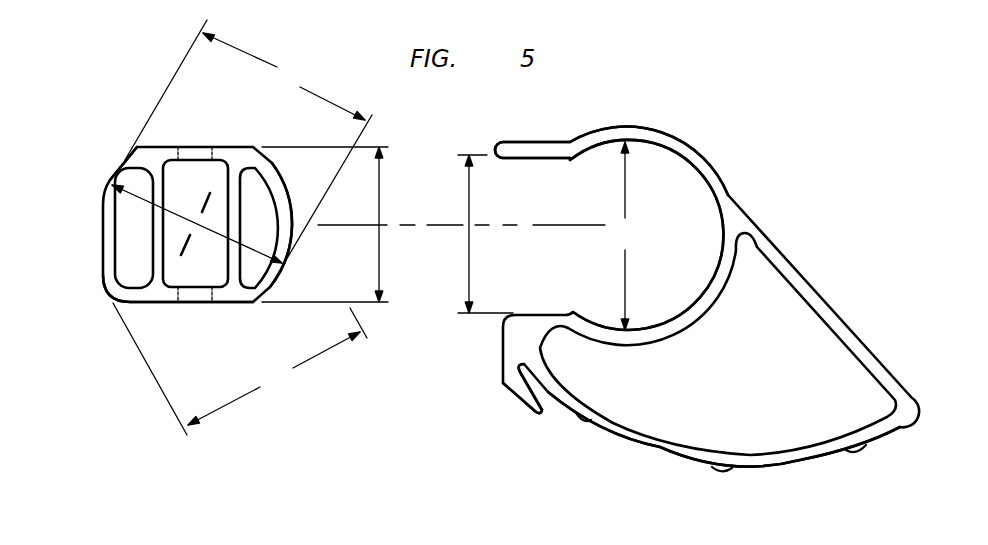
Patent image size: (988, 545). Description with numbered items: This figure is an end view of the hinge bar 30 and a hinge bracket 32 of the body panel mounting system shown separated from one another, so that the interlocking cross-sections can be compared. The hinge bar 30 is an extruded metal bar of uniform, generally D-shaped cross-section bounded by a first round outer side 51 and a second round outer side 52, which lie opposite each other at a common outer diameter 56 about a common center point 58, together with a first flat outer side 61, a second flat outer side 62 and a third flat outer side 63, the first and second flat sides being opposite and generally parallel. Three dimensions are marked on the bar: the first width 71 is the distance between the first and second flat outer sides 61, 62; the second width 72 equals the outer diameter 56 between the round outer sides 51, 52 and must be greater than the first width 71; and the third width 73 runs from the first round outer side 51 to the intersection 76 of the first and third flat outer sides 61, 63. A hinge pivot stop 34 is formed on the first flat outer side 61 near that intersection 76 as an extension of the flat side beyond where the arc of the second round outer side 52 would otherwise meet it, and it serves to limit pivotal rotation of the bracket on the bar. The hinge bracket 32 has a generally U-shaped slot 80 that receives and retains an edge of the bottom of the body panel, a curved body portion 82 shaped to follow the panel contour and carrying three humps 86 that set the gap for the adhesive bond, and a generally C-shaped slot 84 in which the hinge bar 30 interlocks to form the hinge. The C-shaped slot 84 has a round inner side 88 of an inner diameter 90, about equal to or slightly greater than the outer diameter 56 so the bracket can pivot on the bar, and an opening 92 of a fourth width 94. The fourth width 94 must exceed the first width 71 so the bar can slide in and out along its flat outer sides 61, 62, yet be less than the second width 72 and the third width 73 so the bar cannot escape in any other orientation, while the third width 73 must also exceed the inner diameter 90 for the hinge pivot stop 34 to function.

The hinge bar 30 is at (93, 213).
The hinge bracket 32 is at (766, 196).
The hinge pivot stop 34 is at (130, 306).
The first round outer side 51 is at (277, 281).
The second round outer side 52 is at (120, 165).
The outer diameter 56 is at (197, 228).
The center point 58 is at (197, 228).
The first flat outer side 61 is at (197, 303).
The second flat outer side 62 is at (197, 147).
The third flat outer side 63 is at (102, 247).
The first width 71 is at (381, 250).
The second width 72 is at (248, 151).
The third width 73 is at (240, 369).
The intersection 76 is at (108, 300).
The U-shaped slot 80 is at (548, 398).
The curved body portion 82 is at (785, 460).
The C-shaped slot 84 is at (681, 165).
The humps 86 is at (588, 421).
The round inner side 88 is at (703, 288).
The inner diameter 90 is at (627, 236).
The opening 92 is at (540, 188).
The fourth width 94 is at (470, 258).